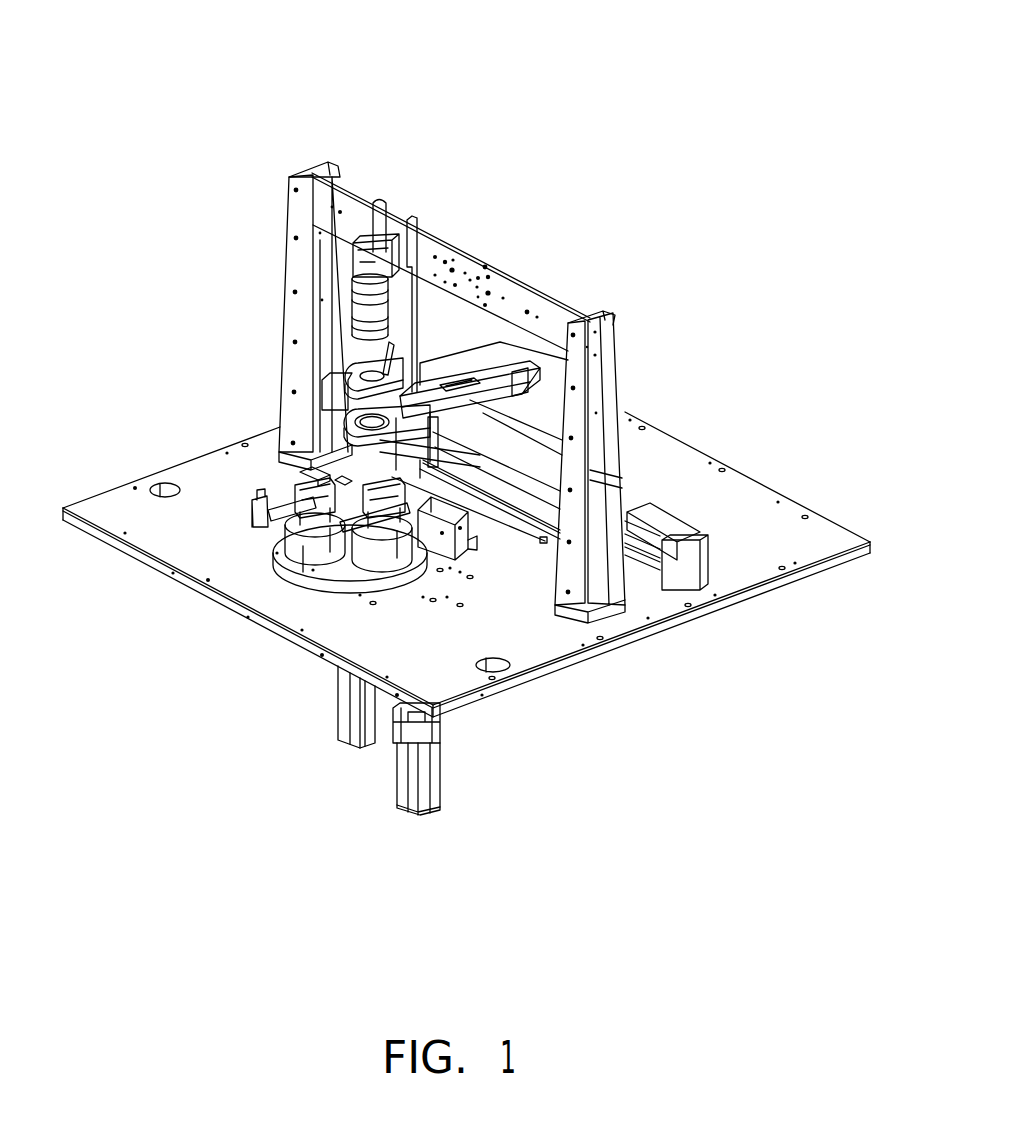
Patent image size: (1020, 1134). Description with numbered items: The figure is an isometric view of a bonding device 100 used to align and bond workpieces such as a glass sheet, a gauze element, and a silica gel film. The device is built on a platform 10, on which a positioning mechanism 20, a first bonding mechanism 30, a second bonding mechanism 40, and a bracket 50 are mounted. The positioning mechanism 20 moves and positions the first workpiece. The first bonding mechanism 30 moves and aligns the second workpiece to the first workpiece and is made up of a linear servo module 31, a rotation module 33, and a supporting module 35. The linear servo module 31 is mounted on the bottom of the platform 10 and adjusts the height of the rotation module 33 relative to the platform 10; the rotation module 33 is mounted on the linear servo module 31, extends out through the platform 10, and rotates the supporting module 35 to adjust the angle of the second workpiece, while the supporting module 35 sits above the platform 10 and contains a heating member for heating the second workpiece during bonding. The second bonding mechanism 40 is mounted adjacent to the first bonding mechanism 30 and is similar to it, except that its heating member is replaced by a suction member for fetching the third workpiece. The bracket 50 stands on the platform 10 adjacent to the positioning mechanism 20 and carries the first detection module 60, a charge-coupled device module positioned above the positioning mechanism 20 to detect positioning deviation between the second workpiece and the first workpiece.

The bonding device 100 is at (507, 72).
The platform 10 is at (735, 488).
The positioning mechanism 20 is at (508, 470).
The first bonding mechanism 30 is at (300, 574).
The linear servo module 31 is at (338, 709).
The rotation module 33 is at (373, 540).
The supporting module 35 is at (284, 556).
The second bonding mechanism 40 is at (333, 557).
The bracket 50 is at (605, 372).
The first detection module 60 is at (353, 312).